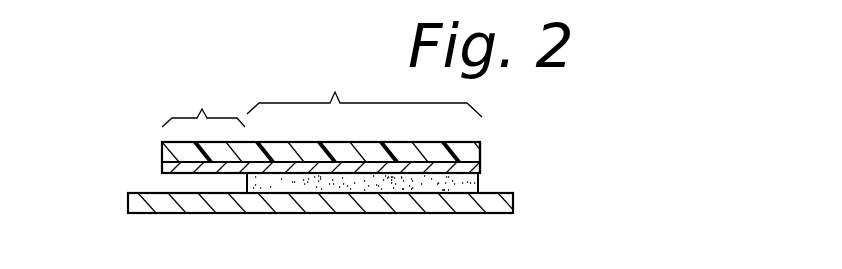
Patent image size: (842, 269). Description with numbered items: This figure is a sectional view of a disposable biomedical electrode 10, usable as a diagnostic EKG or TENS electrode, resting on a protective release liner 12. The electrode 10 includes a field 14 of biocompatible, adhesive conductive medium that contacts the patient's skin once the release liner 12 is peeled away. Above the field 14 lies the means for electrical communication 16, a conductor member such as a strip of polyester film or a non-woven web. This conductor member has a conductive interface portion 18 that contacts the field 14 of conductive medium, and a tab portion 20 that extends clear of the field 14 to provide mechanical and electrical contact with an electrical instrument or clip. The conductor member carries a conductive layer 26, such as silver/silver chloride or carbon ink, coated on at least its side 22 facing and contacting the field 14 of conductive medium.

The electrode 10 is at (537, 150).
The release liner 12 is at (157, 200).
The field of conductive medium 14 is at (478, 185).
The means for electrical communication 16 is at (178, 152).
The conductive interface portion 18 is at (364, 84).
The tab portion 20 is at (203, 99).
The side 22 is at (182, 176).
The conductive layer 26 is at (478, 168).